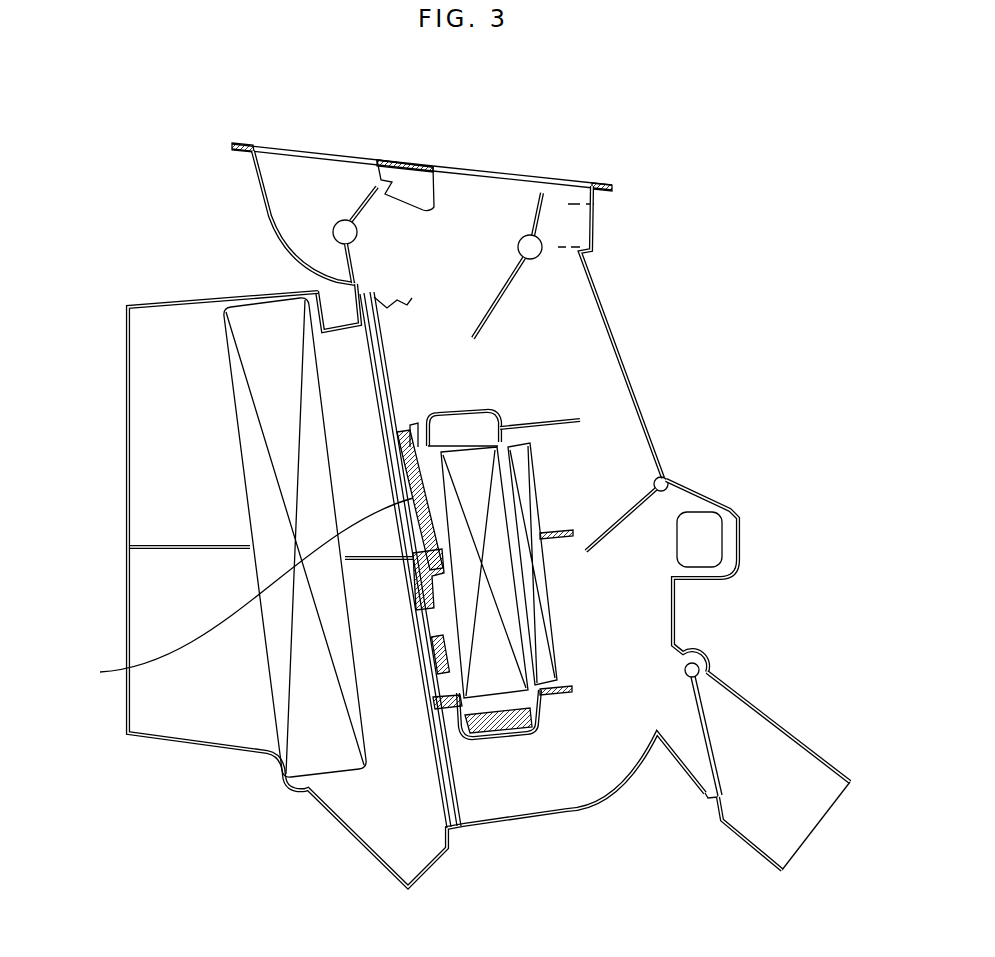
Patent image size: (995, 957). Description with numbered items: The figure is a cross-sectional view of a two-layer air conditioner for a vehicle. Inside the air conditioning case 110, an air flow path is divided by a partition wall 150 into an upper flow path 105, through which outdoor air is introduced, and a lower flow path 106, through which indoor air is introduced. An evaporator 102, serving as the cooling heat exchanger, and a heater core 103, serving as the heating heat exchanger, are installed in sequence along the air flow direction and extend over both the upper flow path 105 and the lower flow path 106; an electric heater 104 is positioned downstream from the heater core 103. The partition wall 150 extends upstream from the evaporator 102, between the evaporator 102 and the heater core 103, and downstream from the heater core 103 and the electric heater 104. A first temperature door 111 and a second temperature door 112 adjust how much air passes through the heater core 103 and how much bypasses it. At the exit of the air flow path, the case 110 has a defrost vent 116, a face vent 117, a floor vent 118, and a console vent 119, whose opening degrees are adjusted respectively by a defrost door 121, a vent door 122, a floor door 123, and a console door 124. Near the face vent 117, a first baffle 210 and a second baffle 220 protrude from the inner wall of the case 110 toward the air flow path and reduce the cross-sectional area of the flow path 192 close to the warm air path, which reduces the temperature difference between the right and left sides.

The evaporator 102 is at (350, 572).
The heater core 103 is at (493, 675).
The electric heater 104 is at (547, 672).
The upper flow path 105 is at (148, 500).
The lower flow path 106 is at (148, 592).
The air conditioning case 110 is at (644, 380).
The first temperature door 111 is at (238, 591).
The second temperature door 112 is at (433, 668).
The defrost vent 116 is at (302, 162).
The face vent 117 is at (508, 190).
The floor vent 118 is at (700, 533).
The console vent 119 is at (780, 825).
The defrost door 121 is at (377, 187).
The vent door 122 is at (487, 292).
The floor door 123 is at (605, 528).
The console door 124 is at (705, 738).
The partition wall 150 is at (205, 547).
The flow path 192 is at (552, 228).
The first baffle 210 is at (563, 246).
The second baffle 220 is at (573, 200).